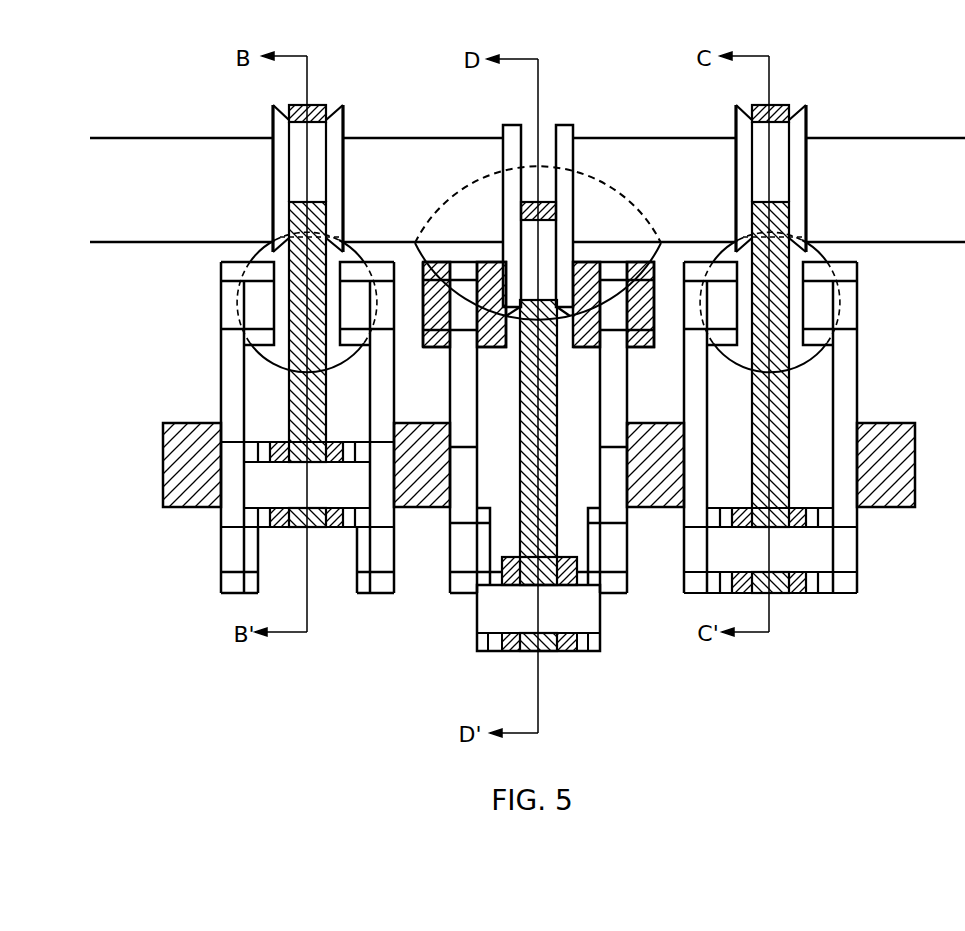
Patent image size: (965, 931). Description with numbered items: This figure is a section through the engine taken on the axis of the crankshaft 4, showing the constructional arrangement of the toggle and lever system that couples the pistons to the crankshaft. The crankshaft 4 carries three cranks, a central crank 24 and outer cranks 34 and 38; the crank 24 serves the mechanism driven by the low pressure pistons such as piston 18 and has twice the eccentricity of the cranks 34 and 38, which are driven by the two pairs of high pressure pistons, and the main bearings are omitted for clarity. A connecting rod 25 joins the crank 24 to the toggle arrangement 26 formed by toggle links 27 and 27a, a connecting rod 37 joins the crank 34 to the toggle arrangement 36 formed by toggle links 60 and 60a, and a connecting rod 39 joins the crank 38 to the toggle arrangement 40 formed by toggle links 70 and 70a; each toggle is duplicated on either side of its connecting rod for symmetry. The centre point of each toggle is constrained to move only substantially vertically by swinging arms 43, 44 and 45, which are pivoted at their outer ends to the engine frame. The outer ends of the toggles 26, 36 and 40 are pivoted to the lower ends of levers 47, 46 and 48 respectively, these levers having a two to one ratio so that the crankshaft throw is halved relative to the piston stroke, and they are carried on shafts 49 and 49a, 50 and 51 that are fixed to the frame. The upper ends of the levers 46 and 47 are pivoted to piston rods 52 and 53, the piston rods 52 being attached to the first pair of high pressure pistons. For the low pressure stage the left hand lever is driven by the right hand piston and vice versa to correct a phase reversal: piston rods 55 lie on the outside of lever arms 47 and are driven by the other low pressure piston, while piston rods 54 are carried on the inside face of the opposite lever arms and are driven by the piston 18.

The crankshaft 4 is at (655, 147).
The low pressure piston 18 is at (630, 200).
The crank 24 is at (545, 228).
The connecting rod 25 is at (527, 373).
The toggle arrangement 26 is at (614, 666).
The toggle link 27 is at (480, 643).
The toggle link 27a is at (497, 655).
The crank 34 is at (318, 152).
The toggle arrangement 36 is at (152, 575).
The connecting rod 37 is at (297, 405).
The crank 38 is at (777, 147).
The connecting rod 39 is at (780, 410).
The toggle arrangement 40 is at (868, 626).
The swinging arm 43 is at (560, 652).
The swinging arm 44 is at (338, 527).
The swinging arm 45 is at (740, 594).
The lever 46 is at (233, 395).
The lever 47 is at (528, 306).
The lever 48 is at (695, 399).
The shaft 49 is at (458, 478).
The shaft 49a is at (613, 482).
The shaft 50 is at (233, 482).
The shaft 51 is at (842, 483).
The piston rod 52 is at (262, 273).
The piston rod 53 is at (725, 260).
The piston rod 54 is at (497, 270).
The piston rod 55 is at (437, 268).
The toggle link 60 is at (240, 583).
The toggle link 60a is at (263, 529).
The toggle link 70 is at (715, 594).
The toggle link 70a is at (812, 594).